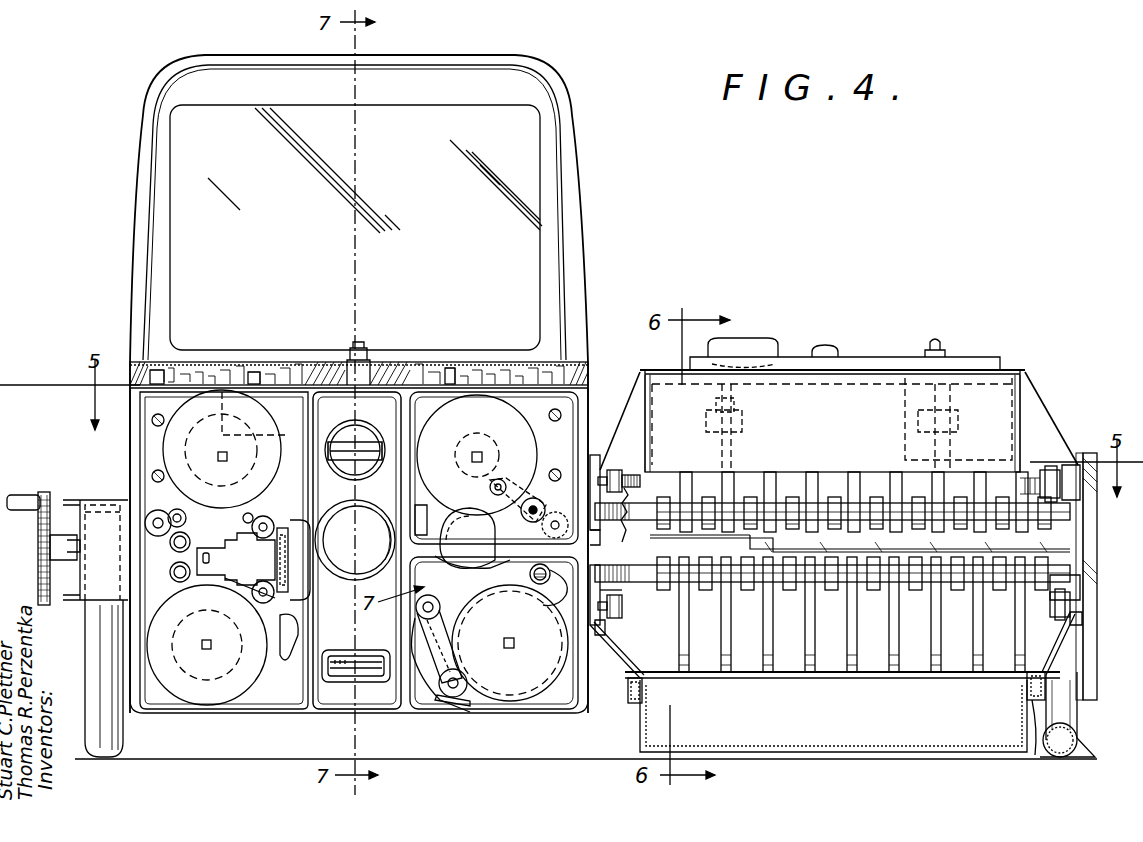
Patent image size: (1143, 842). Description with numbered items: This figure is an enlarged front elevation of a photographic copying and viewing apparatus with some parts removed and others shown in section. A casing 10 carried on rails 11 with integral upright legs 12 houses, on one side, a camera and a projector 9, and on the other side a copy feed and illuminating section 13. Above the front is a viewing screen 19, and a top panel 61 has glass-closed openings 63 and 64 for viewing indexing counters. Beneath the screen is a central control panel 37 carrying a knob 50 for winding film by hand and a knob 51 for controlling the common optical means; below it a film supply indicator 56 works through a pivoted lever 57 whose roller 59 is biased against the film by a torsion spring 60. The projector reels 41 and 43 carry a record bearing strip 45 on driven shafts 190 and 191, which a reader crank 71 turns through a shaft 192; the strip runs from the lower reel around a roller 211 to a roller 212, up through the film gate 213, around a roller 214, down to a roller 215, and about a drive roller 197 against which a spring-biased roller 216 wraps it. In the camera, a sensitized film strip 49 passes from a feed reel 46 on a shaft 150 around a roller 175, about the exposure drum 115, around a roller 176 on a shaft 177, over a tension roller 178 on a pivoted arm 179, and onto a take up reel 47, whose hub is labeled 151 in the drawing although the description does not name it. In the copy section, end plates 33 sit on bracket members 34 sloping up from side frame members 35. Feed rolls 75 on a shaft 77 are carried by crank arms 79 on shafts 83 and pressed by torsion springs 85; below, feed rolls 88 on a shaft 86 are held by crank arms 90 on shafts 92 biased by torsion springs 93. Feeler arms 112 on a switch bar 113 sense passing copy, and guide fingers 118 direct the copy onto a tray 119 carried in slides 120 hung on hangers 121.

The projector 9 is at (275, 400).
The casing 10 is at (135, 425).
The rails 11 is at (1085, 757).
The upright legs 12 is at (1078, 705).
The copy feed and illuminating means 13 is at (960, 455).
The viewing screen 19 is at (515, 165).
The end plates 33 is at (640, 378).
The bracket members 34 is at (645, 400).
The side frame members 35 is at (610, 630).
The central control panel 37 is at (375, 712).
The reel 41 is at (212, 690).
The reel 43 is at (208, 410).
The record bearing strip 45 is at (198, 540).
The feed reel 46 is at (505, 688).
The take up reel 47 is at (478, 410).
The sensitized film strip 49 is at (440, 565).
The knob 50 is at (360, 465).
The knob 51 is at (345, 572).
The film supply indicator 56 is at (350, 675).
The pivoted lever 57 is at (432, 700).
The roller 59 is at (468, 705).
The torsion spring 60 is at (433, 652).
The panel 61 is at (188, 362).
The opening 63 is at (262, 362).
The opening 64 is at (458, 362).
The reader crank 71 is at (22, 495).
The feed rolls 75 is at (668, 500).
The shaft 77 is at (648, 505).
The crank arms 79 is at (603, 480).
The shafts 83 is at (645, 478).
The torsion springs 85 is at (600, 470).
The shaft 86 is at (700, 592).
The feed rolls 88 is at (888, 592).
The crank arms 90 is at (612, 590).
The shafts 92 is at (622, 598).
The torsion springs 93 is at (603, 632).
The feeler arms 112 is at (723, 495).
The switch bar 113 is at (1003, 478).
The exposure drum 115 is at (478, 535).
The guide fingers 118 is at (692, 672).
The tray 119 is at (935, 755).
The slides 120 is at (635, 700).
The hangers 121 is at (620, 665).
The shaft 150 is at (516, 642).
The reel hub 151 is at (476, 452).
The roller 175 is at (552, 595).
The roller 176 is at (536, 572).
The shaft 177 is at (556, 512).
The tension roller 178 is at (533, 500).
The pivoted arm 179 is at (518, 507).
The driven shaft 190 is at (218, 655).
The driven shaft 191 is at (235, 442).
The shaft 192 is at (70, 535).
The drive roller 197 is at (155, 515).
The roller 211 is at (232, 575).
The roller 212 is at (272, 648).
The film gate 213 is at (300, 528).
The roller 214 is at (268, 520).
The roller 215 is at (270, 535).
The roller 216 is at (185, 512).